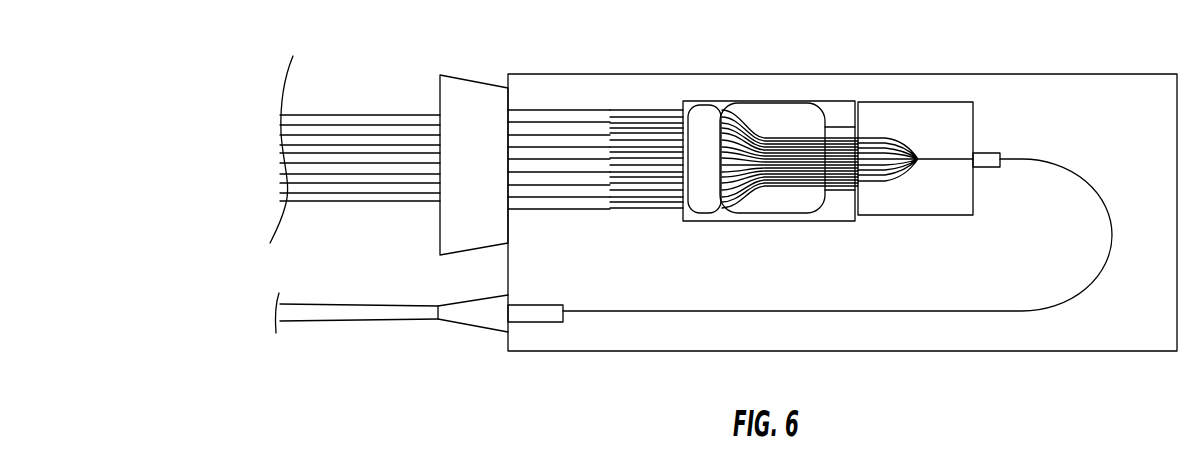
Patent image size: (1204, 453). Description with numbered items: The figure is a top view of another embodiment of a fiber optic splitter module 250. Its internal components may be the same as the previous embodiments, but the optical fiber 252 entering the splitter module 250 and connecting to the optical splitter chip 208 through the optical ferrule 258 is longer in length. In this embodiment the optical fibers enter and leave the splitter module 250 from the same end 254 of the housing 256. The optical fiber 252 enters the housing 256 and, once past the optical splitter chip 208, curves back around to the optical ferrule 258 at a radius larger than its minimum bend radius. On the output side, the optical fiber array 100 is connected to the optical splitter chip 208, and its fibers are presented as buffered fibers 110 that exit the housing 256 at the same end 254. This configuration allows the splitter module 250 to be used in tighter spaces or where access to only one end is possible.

The optical fiber array 100 is at (742, 90).
The buffered fibers 110 is at (392, 115).
The optical splitter chip 208 is at (964, 101).
The splitter module 250 is at (950, 52).
The optical fiber 252 is at (367, 314).
The same end of the housing 254 is at (508, 344).
The housing 256 is at (997, 351).
The optical ferrule 258 is at (993, 152).